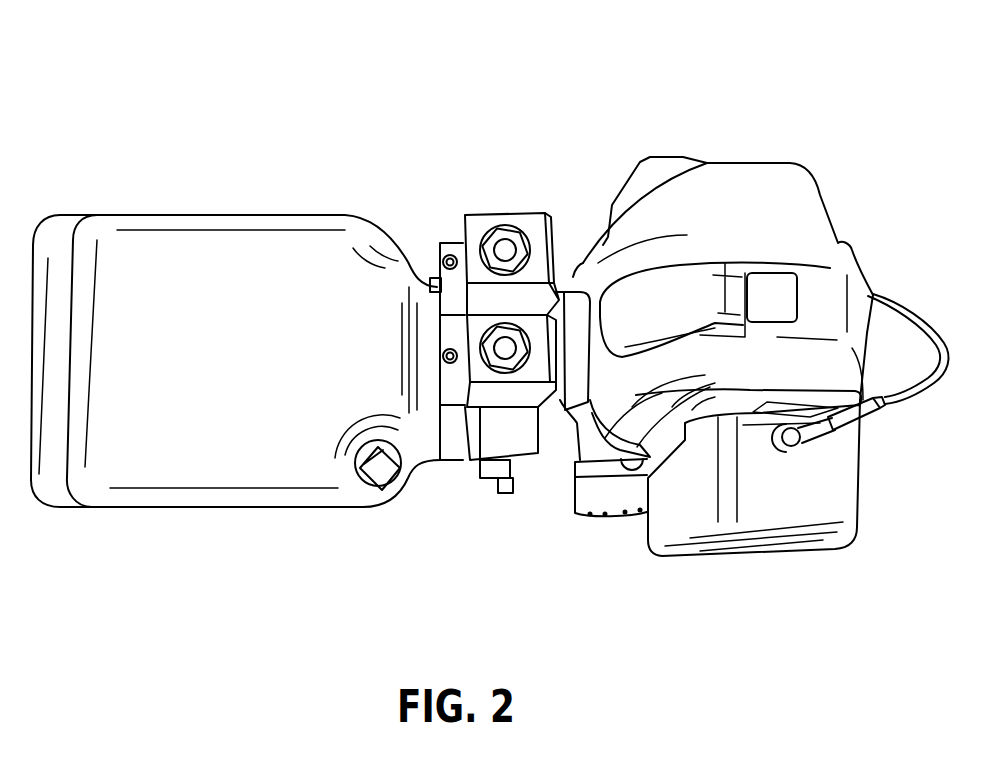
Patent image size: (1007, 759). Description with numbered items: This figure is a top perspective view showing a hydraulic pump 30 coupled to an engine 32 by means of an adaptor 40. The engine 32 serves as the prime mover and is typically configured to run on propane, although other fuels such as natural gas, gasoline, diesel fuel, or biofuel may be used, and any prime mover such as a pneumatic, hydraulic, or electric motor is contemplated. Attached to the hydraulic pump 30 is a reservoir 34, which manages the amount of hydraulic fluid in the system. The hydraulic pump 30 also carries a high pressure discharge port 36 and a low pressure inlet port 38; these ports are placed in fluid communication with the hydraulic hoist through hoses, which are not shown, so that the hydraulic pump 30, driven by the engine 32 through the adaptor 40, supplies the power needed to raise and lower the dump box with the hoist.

The hydraulic pump 30 is at (490, 334).
The engine 32 is at (713, 140).
The reservoir 34 is at (128, 258).
The high pressure discharge port 36 is at (518, 362).
The low pressure inlet port 38 is at (503, 225).
The adaptor 40 is at (563, 290).